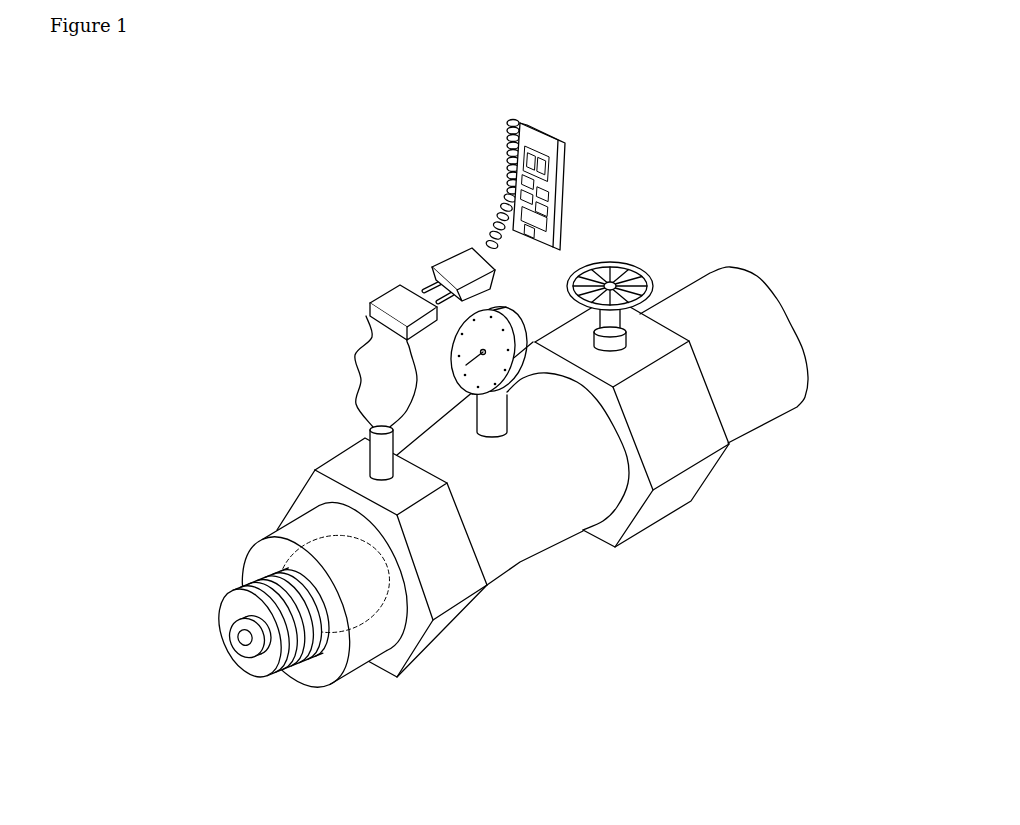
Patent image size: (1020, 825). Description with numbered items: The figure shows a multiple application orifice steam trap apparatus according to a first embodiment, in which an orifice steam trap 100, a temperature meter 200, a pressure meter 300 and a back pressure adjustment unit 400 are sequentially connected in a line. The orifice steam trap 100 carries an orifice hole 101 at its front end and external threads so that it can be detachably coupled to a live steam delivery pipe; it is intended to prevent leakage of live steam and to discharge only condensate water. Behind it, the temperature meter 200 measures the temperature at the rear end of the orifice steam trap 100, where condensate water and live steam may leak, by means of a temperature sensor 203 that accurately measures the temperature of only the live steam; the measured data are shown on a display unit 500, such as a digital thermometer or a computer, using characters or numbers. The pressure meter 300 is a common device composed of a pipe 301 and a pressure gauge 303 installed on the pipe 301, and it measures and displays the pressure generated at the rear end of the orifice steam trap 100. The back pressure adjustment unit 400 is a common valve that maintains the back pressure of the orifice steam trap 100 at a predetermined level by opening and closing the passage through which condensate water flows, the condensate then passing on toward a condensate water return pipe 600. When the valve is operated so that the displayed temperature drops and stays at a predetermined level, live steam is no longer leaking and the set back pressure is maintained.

The orifice steam trap 100 is at (310, 677).
The orifice hole 101 is at (243, 640).
The temperature meter 200 is at (443, 637).
The temperature sensor 203 is at (378, 457).
The pressure meter 300 is at (630, 600).
The pipe 301 is at (517, 547).
The pressure gauge 303 is at (503, 415).
The back pressure adjustment unit 400 is at (688, 487).
The display unit 500 is at (551, 130).
The condensate water return pipe 600 is at (782, 311).